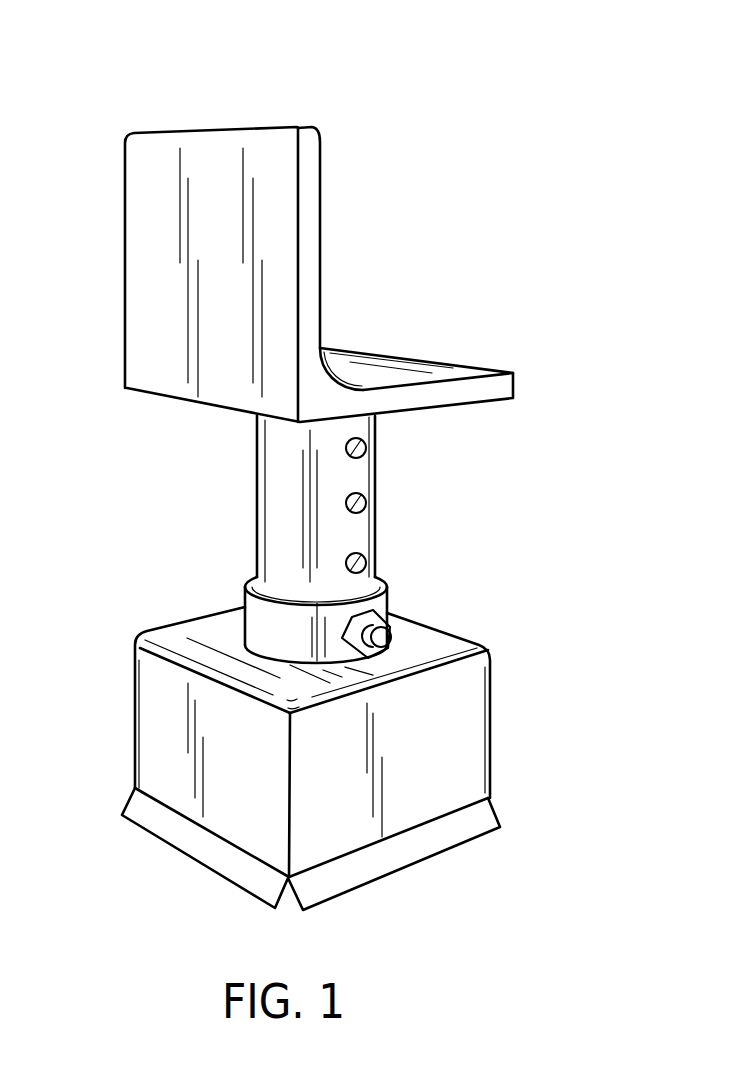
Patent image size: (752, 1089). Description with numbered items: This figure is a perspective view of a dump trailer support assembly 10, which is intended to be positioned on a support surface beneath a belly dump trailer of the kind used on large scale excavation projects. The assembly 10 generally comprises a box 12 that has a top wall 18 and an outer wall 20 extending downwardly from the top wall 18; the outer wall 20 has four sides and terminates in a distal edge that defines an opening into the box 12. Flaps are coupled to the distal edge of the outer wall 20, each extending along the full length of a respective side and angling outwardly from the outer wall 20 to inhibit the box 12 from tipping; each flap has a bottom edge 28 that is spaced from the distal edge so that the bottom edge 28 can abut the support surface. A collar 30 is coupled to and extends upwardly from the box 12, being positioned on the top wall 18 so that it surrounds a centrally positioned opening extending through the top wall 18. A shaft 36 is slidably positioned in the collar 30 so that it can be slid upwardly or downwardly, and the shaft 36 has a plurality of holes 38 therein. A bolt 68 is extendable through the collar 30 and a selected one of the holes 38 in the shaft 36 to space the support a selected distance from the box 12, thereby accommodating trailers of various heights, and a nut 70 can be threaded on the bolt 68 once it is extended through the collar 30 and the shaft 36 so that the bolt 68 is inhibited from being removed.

The dump trailer support assembly 10 is at (497, 165).
The box 12 is at (490, 648).
The top wall 18 is at (208, 637).
The outer wall 20 is at (163, 727).
The bottom edge 28 is at (207, 867).
The collar 30 is at (388, 597).
The shaft 36 is at (257, 486).
The holes 38 is at (367, 563).
The bolt 68 is at (365, 657).
The nut 70 is at (380, 645).